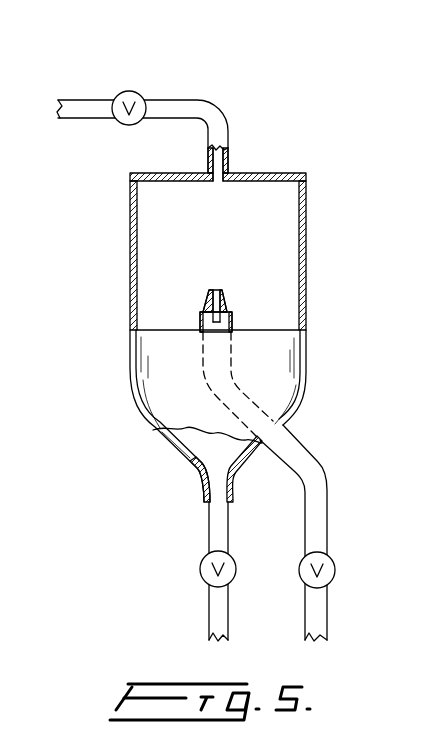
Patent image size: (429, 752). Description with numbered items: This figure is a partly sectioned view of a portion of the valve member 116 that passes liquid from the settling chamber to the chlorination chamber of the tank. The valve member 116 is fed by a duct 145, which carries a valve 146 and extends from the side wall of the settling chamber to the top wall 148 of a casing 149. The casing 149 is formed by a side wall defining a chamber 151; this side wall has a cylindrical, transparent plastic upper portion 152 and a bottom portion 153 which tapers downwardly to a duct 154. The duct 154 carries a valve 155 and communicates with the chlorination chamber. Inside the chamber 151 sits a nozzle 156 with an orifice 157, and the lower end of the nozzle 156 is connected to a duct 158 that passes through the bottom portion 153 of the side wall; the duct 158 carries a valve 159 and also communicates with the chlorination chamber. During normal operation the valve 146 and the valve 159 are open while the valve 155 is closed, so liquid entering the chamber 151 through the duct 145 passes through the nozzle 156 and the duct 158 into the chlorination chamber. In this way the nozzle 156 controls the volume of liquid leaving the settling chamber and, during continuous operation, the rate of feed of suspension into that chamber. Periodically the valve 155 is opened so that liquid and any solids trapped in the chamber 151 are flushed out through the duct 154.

The valve member 116 is at (139, 412).
The duct 145 is at (82, 99).
The valve 146 is at (137, 94).
The top wall 148 is at (268, 173).
The casing 149 is at (294, 346).
The chamber 151 is at (157, 275).
The upper portion 152 is at (307, 228).
The bottom portion 153 is at (131, 378).
The duct 154 is at (209, 532).
The valve 155 is at (202, 576).
The nozzle 156 is at (228, 300).
The orifice 157 is at (217, 289).
The duct 158 is at (307, 455).
The valve 159 is at (335, 568).